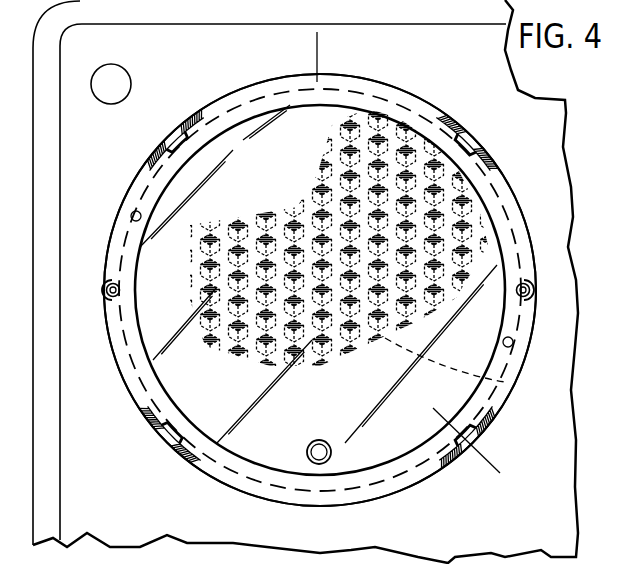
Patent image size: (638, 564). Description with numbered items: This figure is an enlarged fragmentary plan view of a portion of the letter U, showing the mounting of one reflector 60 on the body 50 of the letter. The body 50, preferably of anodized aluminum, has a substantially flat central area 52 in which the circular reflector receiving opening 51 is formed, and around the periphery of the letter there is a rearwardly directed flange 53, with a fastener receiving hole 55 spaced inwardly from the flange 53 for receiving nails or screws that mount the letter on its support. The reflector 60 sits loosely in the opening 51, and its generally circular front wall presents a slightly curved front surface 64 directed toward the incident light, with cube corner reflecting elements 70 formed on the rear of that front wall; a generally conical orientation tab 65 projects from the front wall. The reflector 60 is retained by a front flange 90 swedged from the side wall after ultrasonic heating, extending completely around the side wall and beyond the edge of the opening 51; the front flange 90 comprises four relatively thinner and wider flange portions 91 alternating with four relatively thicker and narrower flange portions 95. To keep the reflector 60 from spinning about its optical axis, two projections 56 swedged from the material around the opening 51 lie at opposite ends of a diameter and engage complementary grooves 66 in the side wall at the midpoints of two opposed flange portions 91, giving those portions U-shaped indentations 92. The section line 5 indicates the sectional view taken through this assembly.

The section line 5- 5 is at (312, 55).
The body 50 is at (231, 118).
The reflector receiving opening 51 is at (127, 220).
The flat area 52 is at (407, 58).
The flange 53 is at (113, 13).
The fastener receiving hole 55 is at (118, 68).
The projection 56 is at (107, 289).
The reflector 60 is at (262, 72).
The front surface 64 is at (263, 169).
The orientation tab 65 is at (332, 452).
The groove 66 is at (130, 292).
The reflecting element 70 is at (406, 107).
The front flange 90 is at (423, 486).
The flange portion 91 is at (511, 203).
The U-shaped indentation 92 is at (110, 297).
The flange portion 95 is at (173, 141).